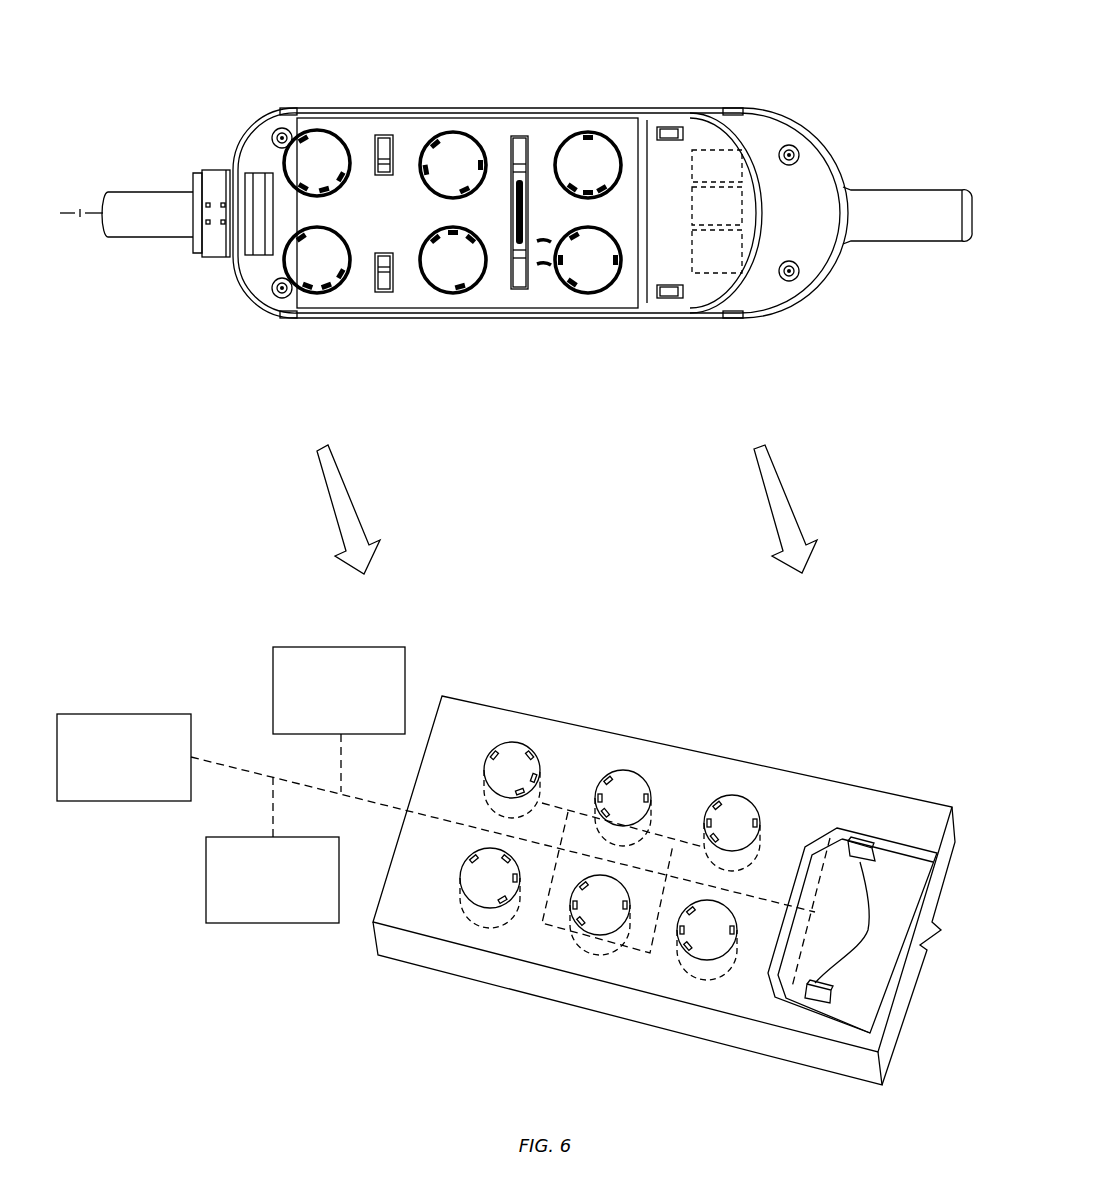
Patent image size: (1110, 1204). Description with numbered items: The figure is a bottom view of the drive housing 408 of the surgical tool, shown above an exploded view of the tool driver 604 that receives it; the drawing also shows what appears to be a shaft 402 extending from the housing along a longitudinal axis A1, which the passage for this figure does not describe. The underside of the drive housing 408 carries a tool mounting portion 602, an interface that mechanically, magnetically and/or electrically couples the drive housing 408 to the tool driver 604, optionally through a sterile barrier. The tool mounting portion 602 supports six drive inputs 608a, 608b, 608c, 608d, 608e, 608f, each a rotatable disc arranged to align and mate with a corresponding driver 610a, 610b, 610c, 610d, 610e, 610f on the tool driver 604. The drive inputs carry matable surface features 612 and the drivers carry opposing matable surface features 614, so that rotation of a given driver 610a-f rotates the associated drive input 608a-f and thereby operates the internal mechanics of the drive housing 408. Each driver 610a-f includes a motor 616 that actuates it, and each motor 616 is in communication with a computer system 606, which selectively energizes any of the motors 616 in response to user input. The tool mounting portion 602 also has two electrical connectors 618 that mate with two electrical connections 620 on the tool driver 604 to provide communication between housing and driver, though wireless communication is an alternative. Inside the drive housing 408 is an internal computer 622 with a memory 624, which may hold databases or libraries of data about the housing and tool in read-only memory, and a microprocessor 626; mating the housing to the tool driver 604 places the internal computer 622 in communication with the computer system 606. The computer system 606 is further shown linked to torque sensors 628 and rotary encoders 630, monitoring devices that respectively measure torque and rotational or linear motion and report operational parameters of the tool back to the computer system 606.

The drive housing 408 is at (208, 106).
The shaft / cable 402 is at (150, 193).
The tool mounting portion 602 is at (438, 323).
The tool driver 604 is at (896, 792).
The computer system 606 is at (436, 813).
The drive input 608a is at (600, 142).
The drive input 608b is at (458, 140).
The drive input 608c is at (455, 283).
The drive input 608d is at (323, 137).
The drive input 608e is at (317, 278).
The drive input 608f is at (588, 277).
The driver 610a is at (718, 943).
The driver 610b is at (603, 917).
The driver 610c is at (633, 783).
The driver 610d is at (468, 892).
The driver 610e is at (508, 757).
The driver 610f is at (745, 807).
The matable surface features 612 is at (433, 187).
The matable surface features 614 is at (541, 770).
The motor 616 is at (480, 795).
The electrical connectors 618 is at (673, 127).
The electrical connections 620 is at (869, 928).
The internal computer 622 is at (717, 166).
The memory 624 is at (717, 206).
The microprocessor 626 is at (717, 251).
The torque sensors 628 is at (272, 850).
The rotary encoders 630 is at (339, 719).
The longitudinal axis A1 is at (85, 210).